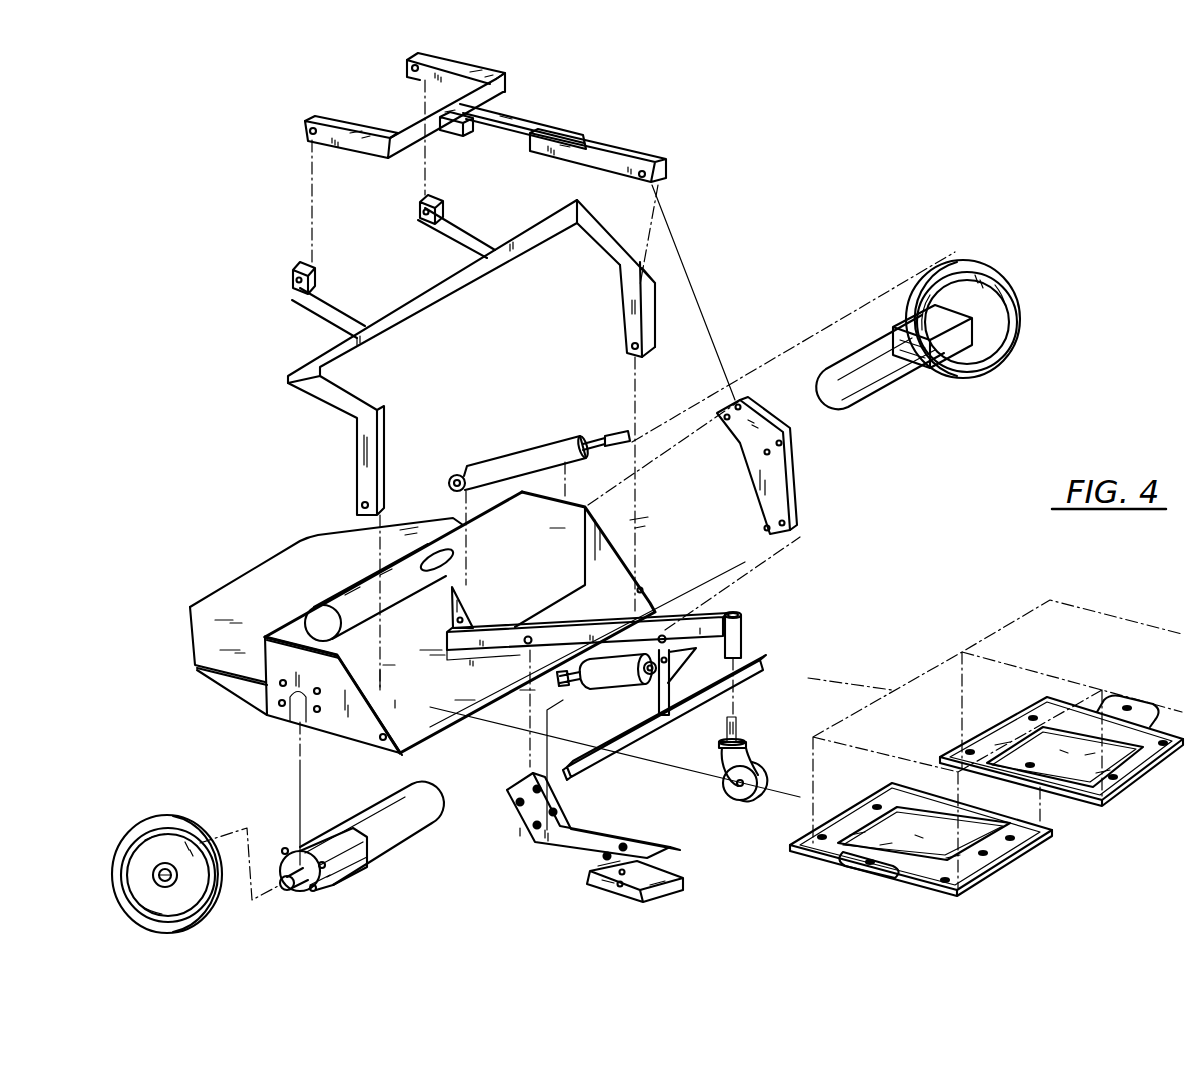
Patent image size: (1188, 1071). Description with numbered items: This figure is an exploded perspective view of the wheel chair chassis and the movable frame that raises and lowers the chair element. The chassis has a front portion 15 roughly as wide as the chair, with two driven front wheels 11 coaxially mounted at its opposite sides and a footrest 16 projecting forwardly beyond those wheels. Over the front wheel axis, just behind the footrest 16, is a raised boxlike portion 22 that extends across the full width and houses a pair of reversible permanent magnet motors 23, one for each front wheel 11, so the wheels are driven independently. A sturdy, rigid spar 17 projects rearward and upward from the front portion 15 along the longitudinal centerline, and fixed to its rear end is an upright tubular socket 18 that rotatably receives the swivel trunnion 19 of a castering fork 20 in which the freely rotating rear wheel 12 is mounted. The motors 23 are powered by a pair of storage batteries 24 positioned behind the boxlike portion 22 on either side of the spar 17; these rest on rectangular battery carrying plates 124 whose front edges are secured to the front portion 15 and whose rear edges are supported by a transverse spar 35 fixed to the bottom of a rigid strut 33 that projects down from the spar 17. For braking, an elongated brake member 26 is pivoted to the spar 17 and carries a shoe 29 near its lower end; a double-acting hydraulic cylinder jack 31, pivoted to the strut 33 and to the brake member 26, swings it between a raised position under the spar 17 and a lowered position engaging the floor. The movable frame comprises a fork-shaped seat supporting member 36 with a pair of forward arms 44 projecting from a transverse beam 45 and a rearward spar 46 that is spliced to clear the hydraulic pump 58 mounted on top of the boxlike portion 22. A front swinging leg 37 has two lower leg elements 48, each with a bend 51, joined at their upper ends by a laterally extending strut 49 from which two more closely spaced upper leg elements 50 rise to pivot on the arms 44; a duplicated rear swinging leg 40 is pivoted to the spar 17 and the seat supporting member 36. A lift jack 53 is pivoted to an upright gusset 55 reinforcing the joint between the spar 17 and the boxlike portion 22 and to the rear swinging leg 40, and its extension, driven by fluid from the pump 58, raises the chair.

The front wheel 11 is at (175, 822).
The rear wheel 12 is at (740, 747).
The front portion 15 is at (412, 616).
The footrest 16 is at (270, 588).
The spar 17 is at (653, 627).
The tubular socket 18 is at (743, 617).
The swivel trunnion 19 is at (742, 727).
The castering fork 20 is at (720, 745).
The boxlike portion 22 is at (445, 547).
The permanent magnet motor 23 is at (400, 833).
The storage battery 24 is at (963, 648).
The battery carrying plate 124 is at (1100, 803).
The brake member 26 is at (577, 827).
The shoe 29 is at (663, 873).
The hydraulic cylinder jack 31 is at (607, 690).
The strut 33 is at (672, 680).
The transverse spar 35 is at (763, 660).
The seat supporting member 36 is at (484, 99).
The front swinging leg 37 is at (485, 350).
The rear swinging leg 40 is at (803, 486).
The arm 44 is at (320, 118).
The transverse beam 45 is at (408, 120).
The spar 46 is at (563, 125).
The lower leg element 48 is at (632, 320).
The strut 49 is at (433, 296).
The upper leg element 50 is at (323, 290).
The bend 51 is at (655, 268).
The hydraulic cylinder jack 53 is at (527, 450).
The gusset 55 is at (470, 603).
The hydraulic pump 58 is at (337, 603).